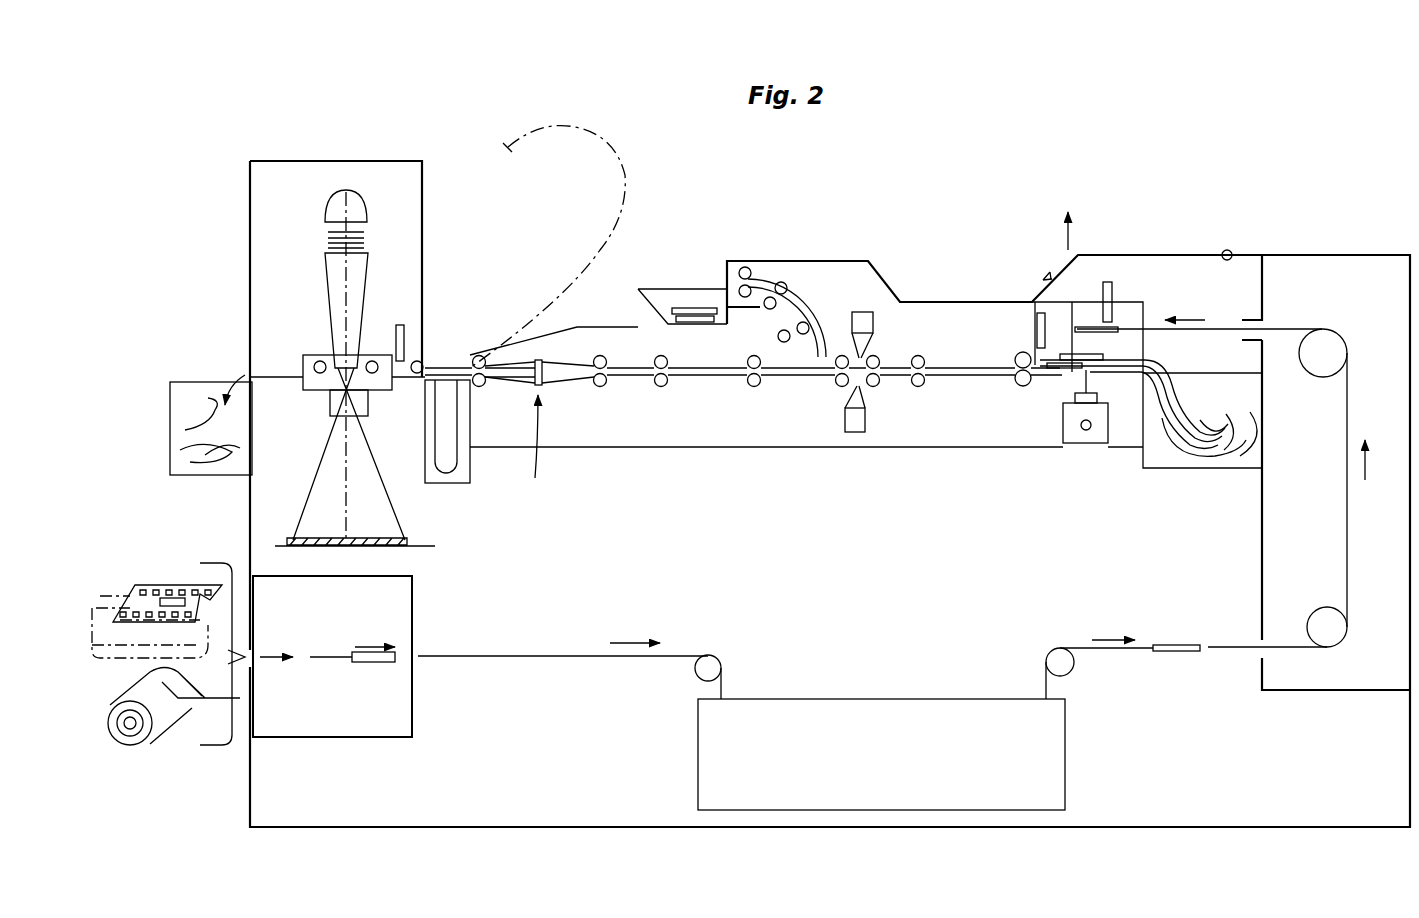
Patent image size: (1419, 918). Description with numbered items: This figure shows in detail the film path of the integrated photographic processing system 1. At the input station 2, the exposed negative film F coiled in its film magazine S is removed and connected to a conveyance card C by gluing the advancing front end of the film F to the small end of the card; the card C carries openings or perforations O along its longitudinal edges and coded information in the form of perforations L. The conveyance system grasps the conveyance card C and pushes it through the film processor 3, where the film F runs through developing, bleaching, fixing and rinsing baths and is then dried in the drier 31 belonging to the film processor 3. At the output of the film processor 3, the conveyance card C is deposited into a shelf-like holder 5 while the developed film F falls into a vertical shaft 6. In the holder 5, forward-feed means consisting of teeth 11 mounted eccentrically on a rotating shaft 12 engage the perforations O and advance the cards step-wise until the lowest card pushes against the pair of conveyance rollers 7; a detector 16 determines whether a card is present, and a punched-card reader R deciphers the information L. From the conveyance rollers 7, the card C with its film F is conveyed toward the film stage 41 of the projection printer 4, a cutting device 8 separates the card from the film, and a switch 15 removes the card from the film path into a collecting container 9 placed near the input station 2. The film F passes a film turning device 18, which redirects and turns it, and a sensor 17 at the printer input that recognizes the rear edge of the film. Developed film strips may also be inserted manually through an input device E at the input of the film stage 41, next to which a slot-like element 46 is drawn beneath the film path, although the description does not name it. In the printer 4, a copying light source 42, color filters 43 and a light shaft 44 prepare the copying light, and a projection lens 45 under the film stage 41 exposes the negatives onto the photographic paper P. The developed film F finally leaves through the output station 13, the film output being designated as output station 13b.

The integrated photographic processing system 1 is at (1138, 172).
The input station 2 is at (247, 762).
The film processor 3 is at (862, 715).
The projection printer 4 is at (238, 305).
The shelf-like holder 5 is at (1137, 290).
The vertical shaft 6 is at (1153, 455).
The pair of conveyance rollers 7 is at (1018, 352).
The cutting device 8 is at (862, 312).
The collecting container 9 is at (672, 300).
The teeth 11 is at (1082, 380).
The rotating shaft 12 is at (1086, 432).
The output station 13 is at (185, 368).
The output station for the film 13b is at (185, 398).
The switch 15 is at (822, 343).
The detector 16 is at (1110, 290).
The sensor 17 is at (405, 332).
The film turning device 18 is at (539, 435).
The drier 31 is at (1280, 560).
The film stage 41 is at (322, 380).
The copying light source 42 is at (343, 193).
The color filters 43 is at (326, 244).
The light shaft 44 is at (337, 272).
The projection lens 45 is at (366, 402).
The slot 46 is at (458, 472).
The film F is at (565, 374).
The conveyance card C is at (706, 300).
The openings or perforations O is at (150, 580).
The perforations (coded information) L is at (178, 595).
The film magazine S is at (130, 735).
The photographic paper P is at (393, 540).
The input device E is at (428, 358).
The punched-card reader R is at (1040, 320).